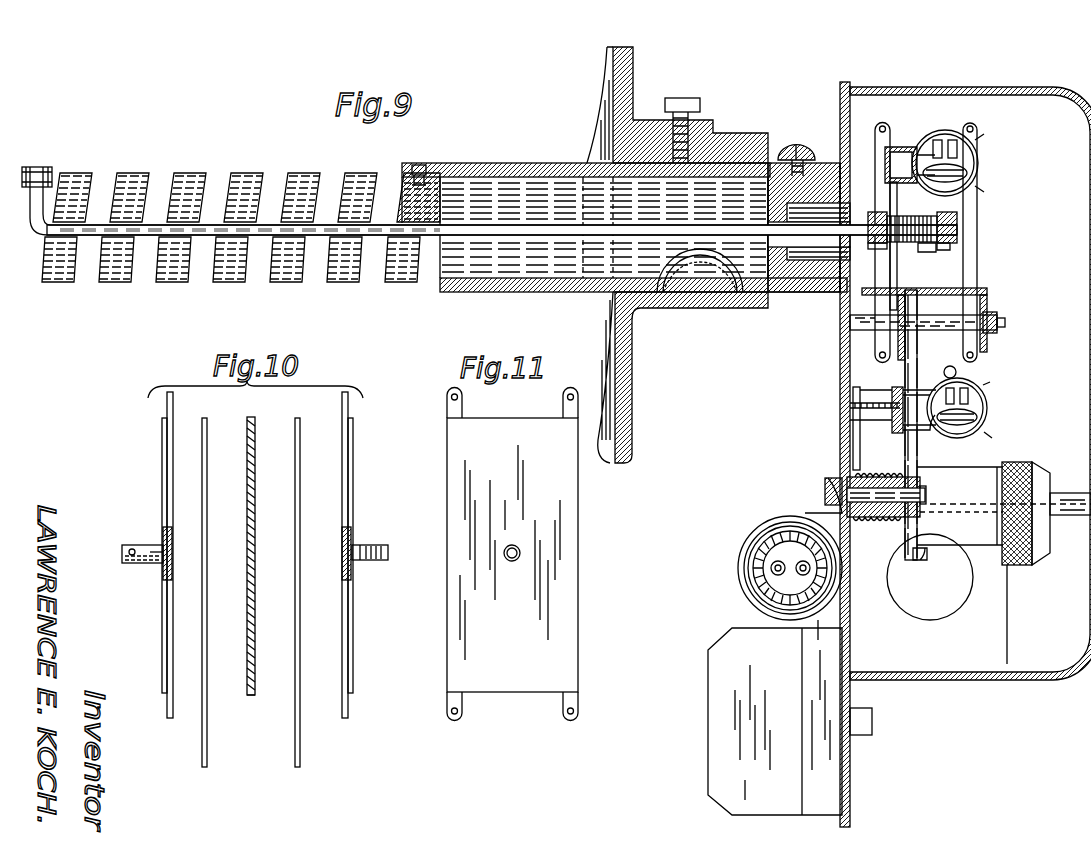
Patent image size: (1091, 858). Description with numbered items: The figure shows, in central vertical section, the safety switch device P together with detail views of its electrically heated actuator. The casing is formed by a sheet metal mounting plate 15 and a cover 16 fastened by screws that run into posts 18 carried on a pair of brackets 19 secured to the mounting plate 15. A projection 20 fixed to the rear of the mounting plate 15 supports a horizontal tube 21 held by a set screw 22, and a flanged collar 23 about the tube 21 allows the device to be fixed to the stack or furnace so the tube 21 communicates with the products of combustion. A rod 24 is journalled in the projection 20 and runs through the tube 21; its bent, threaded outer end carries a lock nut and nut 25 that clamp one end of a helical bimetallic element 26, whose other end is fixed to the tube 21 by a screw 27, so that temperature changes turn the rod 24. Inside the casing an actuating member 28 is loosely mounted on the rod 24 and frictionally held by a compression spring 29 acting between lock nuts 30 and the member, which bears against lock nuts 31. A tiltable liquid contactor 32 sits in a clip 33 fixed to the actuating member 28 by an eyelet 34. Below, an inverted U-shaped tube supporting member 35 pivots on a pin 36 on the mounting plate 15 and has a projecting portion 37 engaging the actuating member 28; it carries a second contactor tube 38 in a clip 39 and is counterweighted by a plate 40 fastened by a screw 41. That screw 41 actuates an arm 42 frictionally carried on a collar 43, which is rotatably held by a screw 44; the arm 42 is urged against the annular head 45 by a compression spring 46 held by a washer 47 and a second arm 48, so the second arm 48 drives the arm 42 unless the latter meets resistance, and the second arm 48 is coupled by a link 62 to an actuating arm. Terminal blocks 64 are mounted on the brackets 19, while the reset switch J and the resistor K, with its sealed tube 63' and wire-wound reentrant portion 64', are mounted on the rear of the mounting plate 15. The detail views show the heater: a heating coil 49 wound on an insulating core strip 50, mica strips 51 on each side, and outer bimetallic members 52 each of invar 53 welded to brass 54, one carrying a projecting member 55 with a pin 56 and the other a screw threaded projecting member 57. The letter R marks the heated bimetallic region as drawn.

In FIG. 9, the mounting plate 15 is at (838, 356).
In FIG. 9, the cover 16 is at (1022, 88).
In FIG. 9, the posts 18 is at (1060, 493).
In FIG. 9, the brackets 19 is at (983, 547).
In FIG. 9, the projection 20 is at (800, 294).
In FIG. 9, the tube 21 is at (538, 163).
In FIG. 9, the set screw 22 is at (796, 147).
In FIG. 9, the flanged collar 23 is at (632, 376).
In FIG. 9, the rod 24 is at (960, 231).
In FIG. 9, the nut 25 is at (33, 176).
In FIG. 9, the helical bimetallic element 26 is at (150, 174).
In FIG. 9, the screw 27 is at (428, 166).
In FIG. 9, the actuating member 28 is at (898, 266).
In FIG. 9, the compression spring 29 is at (928, 252).
In FIG. 9, the lock nuts 30 is at (946, 247).
In FIG. 9, the lock nuts 31 is at (878, 250).
In FIG. 9, the tiltable liquid contactor 32 is at (947, 131).
In FIG. 9, the clip 33 is at (905, 146).
In FIG. 9, the eyelet 34 is at (890, 166).
In FIG. 9, the tube supporting member 35 is at (906, 354).
In FIG. 9, the pin 36 is at (846, 310).
In FIG. 9, the projecting portion 37 is at (888, 290).
In FIG. 9, the contactor tube 38 is at (990, 404).
In FIG. 9, the clip 39 is at (982, 390).
In FIG. 9, the plate 40 is at (893, 398).
In FIG. 9, the screw 41 is at (889, 415).
In FIG. 9, the arm 42 is at (840, 420).
In FIG. 9, the collar 43 is at (873, 520).
In FIG. 9, the screw 44 is at (922, 491).
In FIG. 9, the annular head 45 is at (845, 477).
In FIG. 9, the compression spring 46 is at (880, 518).
In FIG. 9, the washer 47 is at (916, 463).
In FIG. 9, the second arm 48 is at (920, 521).
In FIG. 10, the heating coil 49 is at (246, 697).
In FIG. 10, the strip of insulating material 50 is at (262, 618).
In FIG. 10, the strip of mica 51 is at (202, 625).
In FIG. 10, the bimetallic members 52 is at (155, 468).
In FIG. 10, the strip of invar metal 53 is at (170, 490).
In FIG. 10, the strip of brass 54 is at (165, 432).
In FIG. 11, the strip of brass 54 is at (565, 522).
In FIG. 10, the projecting member 55 is at (150, 563).
In FIG. 10, the pin 56 is at (122, 554).
In FIG. 10, the screw threaded projecting member 57 is at (375, 546).
In FIG. 9, the link 62 is at (917, 561).
In FIG. 9, the sealed tube 63' is at (735, 584).
In FIG. 9, the reentrant portion 64' is at (738, 599).
In FIG. 9, the terminal blocks 64 is at (1026, 530).
In FIG. 9, the resistor K is at (731, 559).
In FIG. 9, the reset switch J is at (722, 711).
In FIG. 9, the device P is at (831, 81).
In FIG. 9, the heating element R is at (233, 284).